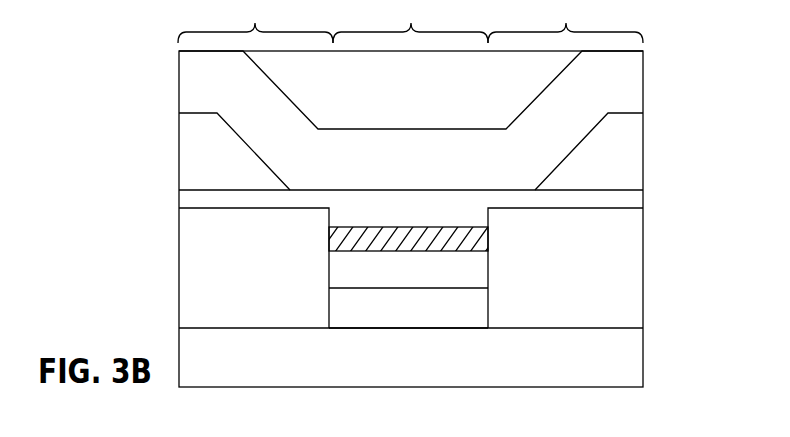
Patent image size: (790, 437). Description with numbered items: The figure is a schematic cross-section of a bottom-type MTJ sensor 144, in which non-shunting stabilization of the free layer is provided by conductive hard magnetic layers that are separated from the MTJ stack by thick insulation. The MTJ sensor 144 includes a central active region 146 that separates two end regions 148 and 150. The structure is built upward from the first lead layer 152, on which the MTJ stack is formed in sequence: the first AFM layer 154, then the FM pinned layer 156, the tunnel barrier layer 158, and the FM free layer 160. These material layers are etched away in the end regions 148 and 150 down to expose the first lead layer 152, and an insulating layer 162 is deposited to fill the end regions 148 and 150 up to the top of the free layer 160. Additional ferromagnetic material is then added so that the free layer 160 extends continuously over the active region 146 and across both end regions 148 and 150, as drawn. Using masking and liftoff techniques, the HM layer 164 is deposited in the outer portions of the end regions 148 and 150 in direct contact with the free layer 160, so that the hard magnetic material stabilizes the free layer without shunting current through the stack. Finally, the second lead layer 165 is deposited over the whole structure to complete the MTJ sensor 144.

The MTJ sensor 144 is at (143, 62).
The active region 146 is at (410, 21).
The end region 148 is at (255, 21).
The end region 150 is at (565, 21).
The first lead (L1) layer 152 is at (636, 354).
The first AFM layer 154 is at (481, 307).
The FM pinned layer 156 is at (481, 272).
The tunnel barrier layer 158 is at (488, 238).
The FM free layer 160 is at (636, 204).
The insulating layer 162 is at (188, 255).
The HM layer 164 is at (188, 130).
The second lead (L2) layer 165 is at (636, 84).